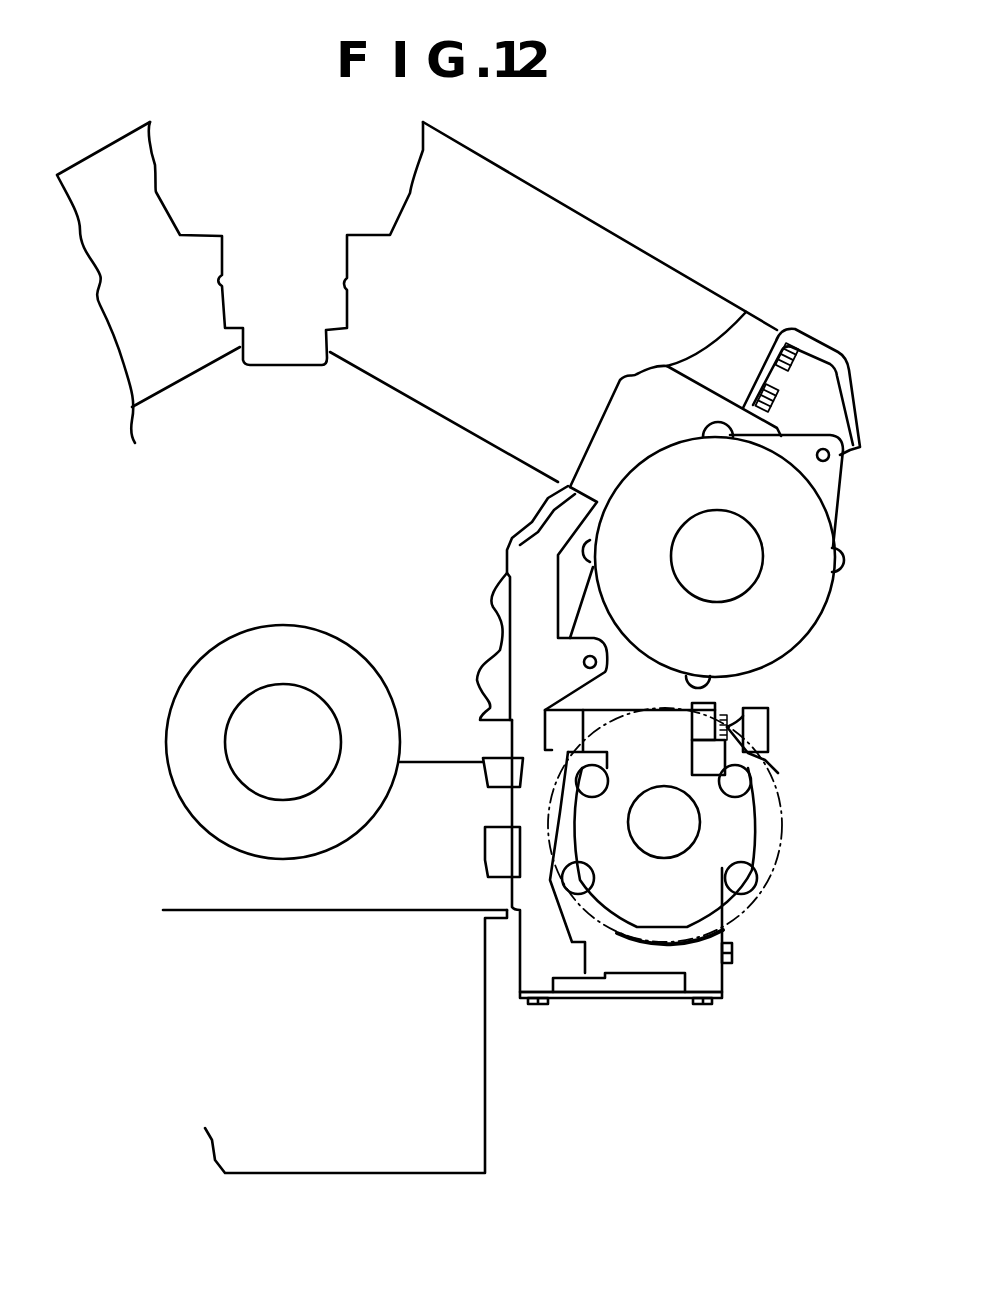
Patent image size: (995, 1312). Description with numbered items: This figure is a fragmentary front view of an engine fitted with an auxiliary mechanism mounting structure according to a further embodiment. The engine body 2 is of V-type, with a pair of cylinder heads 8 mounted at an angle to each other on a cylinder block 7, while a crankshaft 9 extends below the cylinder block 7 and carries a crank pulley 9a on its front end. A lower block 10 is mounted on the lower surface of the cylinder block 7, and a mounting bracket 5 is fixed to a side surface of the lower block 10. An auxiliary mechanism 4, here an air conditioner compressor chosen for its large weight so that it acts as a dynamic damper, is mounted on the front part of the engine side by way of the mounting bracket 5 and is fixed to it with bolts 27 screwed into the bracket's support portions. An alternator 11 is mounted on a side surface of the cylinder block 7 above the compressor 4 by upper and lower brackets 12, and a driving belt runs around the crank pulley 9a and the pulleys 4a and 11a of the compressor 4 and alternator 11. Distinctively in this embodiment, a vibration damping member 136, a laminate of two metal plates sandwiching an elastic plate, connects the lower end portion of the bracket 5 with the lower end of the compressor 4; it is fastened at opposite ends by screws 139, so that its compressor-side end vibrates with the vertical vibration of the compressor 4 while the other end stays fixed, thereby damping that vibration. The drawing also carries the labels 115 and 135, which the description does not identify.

The engine body 2 is at (287, 296).
The auxiliary mechanism (compressor) 4 is at (760, 812).
The pulley 4a is at (742, 912).
The mounting bracket 5 is at (508, 958).
The cylinder block 7 is at (432, 442).
The cylinder heads 8 is at (152, 192).
The crankshaft 9 is at (265, 722).
The crank pulley 9a is at (340, 637).
The lower block 10 is at (358, 903).
The alternator 11 is at (790, 612).
The pulley 11a is at (713, 508).
The upper and lower brackets 12 is at (822, 380).
The bolts 27 is at (725, 723).
The platform 115 is at (413, 1158).
The bottom cover 135 is at (664, 1004).
The vibration damping member 136 is at (620, 994).
The screws 139 is at (535, 1005).